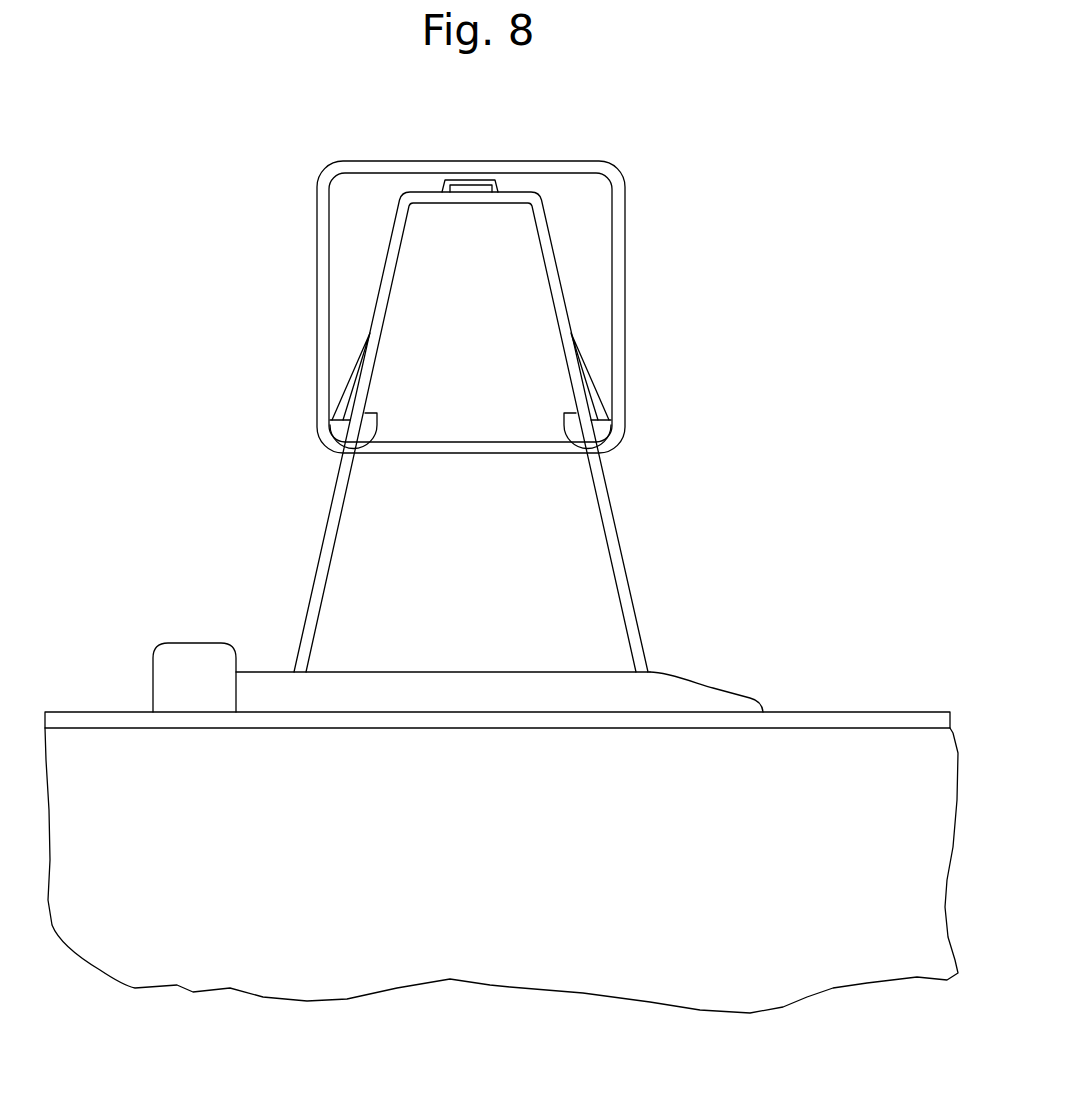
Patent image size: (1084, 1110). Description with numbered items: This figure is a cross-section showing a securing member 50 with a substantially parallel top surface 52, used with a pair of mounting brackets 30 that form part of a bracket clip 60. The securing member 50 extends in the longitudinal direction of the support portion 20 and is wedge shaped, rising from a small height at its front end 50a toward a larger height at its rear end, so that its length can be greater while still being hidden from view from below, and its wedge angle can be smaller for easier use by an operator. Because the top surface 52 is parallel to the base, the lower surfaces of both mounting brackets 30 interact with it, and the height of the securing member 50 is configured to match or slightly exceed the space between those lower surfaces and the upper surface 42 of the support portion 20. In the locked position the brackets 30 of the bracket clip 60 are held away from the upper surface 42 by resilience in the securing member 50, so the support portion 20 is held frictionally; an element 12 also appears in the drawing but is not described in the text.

The bracket 12 is at (428, 162).
The mounting bracket 30 is at (622, 557).
The bracket clip 60 is at (652, 473).
The top surface 52 is at (262, 670).
The securing member 50 is at (327, 693).
The front end 50a is at (708, 687).
The upper surface 42 is at (892, 712).
The support portion 20 is at (503, 898).